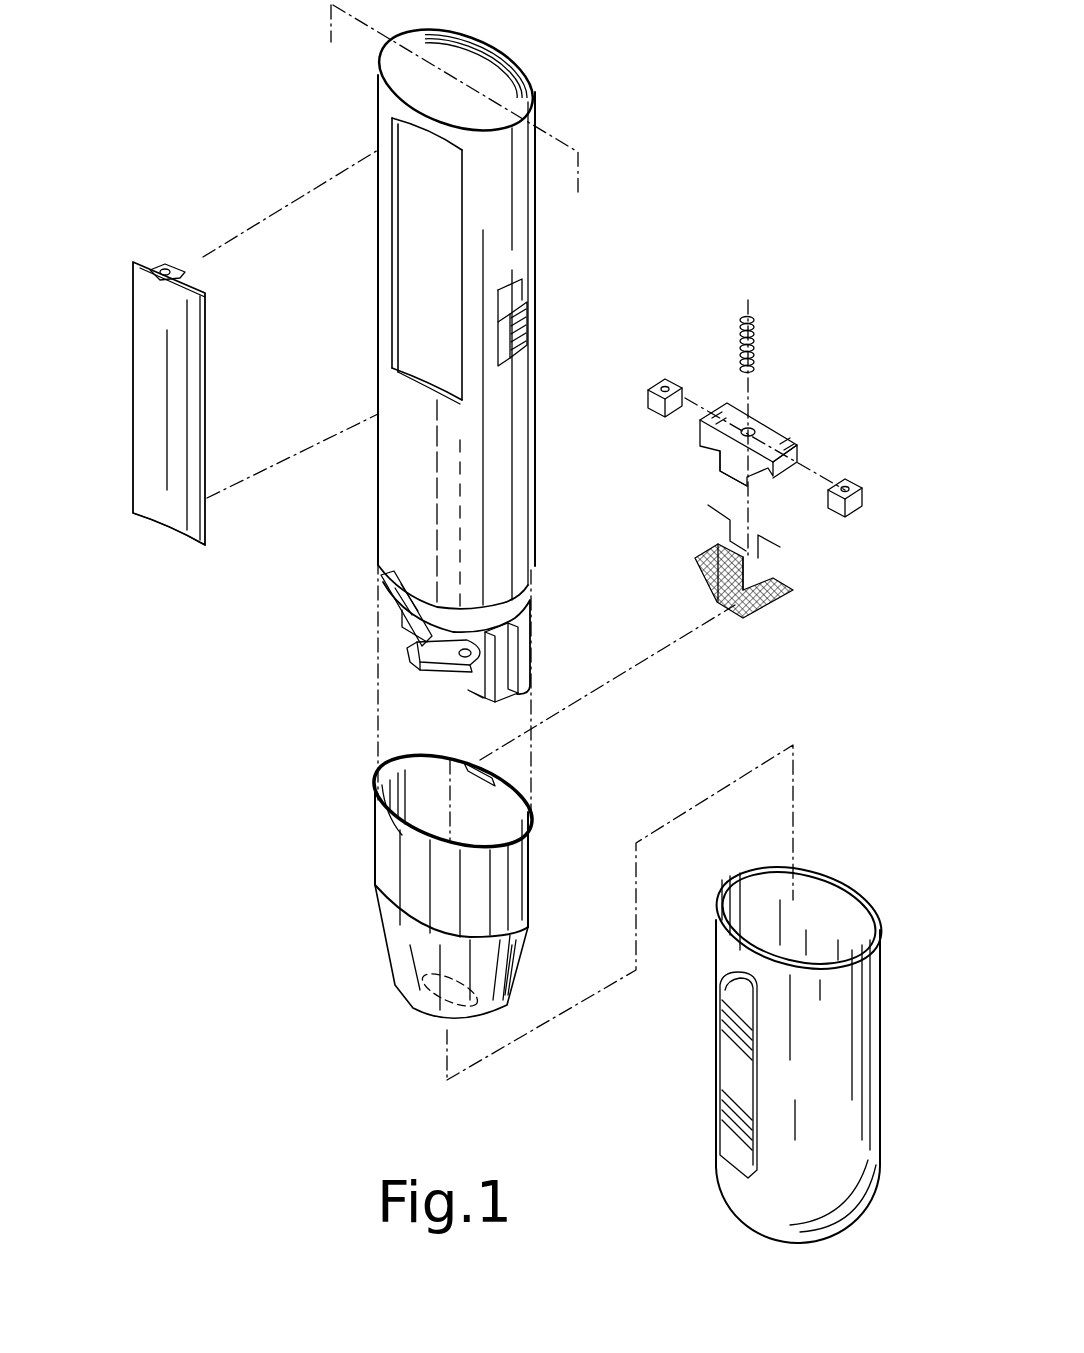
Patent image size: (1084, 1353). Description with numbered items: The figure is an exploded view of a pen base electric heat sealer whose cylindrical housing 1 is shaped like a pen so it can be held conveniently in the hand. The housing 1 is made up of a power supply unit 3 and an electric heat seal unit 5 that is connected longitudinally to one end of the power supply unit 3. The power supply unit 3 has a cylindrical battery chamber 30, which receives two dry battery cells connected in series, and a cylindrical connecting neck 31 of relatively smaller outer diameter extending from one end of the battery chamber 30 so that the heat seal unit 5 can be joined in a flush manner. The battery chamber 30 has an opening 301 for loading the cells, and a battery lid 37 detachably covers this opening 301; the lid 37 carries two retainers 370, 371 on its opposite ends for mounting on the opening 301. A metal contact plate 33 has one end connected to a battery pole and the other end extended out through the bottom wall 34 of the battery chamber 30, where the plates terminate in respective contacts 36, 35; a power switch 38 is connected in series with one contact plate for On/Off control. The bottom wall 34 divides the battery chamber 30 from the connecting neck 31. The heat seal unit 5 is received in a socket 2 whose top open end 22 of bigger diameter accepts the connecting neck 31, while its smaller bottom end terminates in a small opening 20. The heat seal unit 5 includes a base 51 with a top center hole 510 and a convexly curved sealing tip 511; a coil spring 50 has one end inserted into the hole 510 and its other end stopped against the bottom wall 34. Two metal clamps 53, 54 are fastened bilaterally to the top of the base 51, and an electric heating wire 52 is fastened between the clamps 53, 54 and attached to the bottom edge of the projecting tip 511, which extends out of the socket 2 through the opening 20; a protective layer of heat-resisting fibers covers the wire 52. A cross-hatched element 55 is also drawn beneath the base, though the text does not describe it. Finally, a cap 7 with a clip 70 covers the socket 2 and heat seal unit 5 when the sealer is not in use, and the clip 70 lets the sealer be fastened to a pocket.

The cylindrical housing 1 is at (318, 711).
The socket 2 is at (400, 885).
The small opening 20 is at (440, 1000).
The top open end 22 is at (505, 812).
The power supply unit 3 is at (332, 41).
The cylindrical battery chamber 30 is at (522, 384).
The opening 301 is at (393, 262).
The cylindrical connecting neck 31 is at (517, 607).
The metal contact plate 33 is at (382, 576).
The bottom wall 34 is at (417, 648).
The contact 35 is at (408, 658).
The contact 36 is at (477, 696).
The battery lid 37 is at (187, 412).
The retainer 370 is at (165, 265).
The retainer 371 is at (152, 540).
The power switch 38 is at (518, 312).
The electric heat seal unit 5 is at (778, 388).
The coil spring 50 is at (746, 316).
The base 51 is at (778, 440).
The top center hole 510 is at (746, 428).
The sealing tip 511 is at (725, 470).
The electric heating wire 52 is at (780, 545).
The metal clamp 53 is at (853, 495).
The metal clamp 54 is at (648, 398).
The insulating block 55 is at (778, 602).
The cap 7 is at (832, 883).
The clip 70 is at (732, 1068).